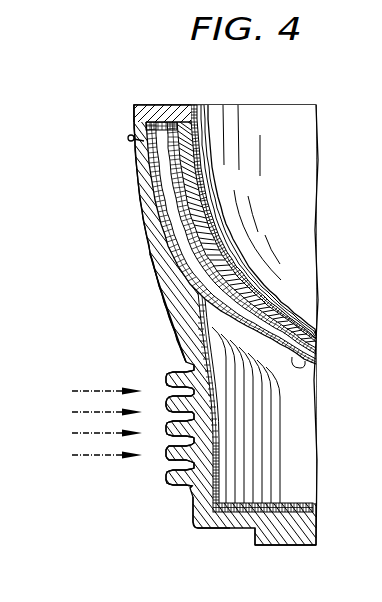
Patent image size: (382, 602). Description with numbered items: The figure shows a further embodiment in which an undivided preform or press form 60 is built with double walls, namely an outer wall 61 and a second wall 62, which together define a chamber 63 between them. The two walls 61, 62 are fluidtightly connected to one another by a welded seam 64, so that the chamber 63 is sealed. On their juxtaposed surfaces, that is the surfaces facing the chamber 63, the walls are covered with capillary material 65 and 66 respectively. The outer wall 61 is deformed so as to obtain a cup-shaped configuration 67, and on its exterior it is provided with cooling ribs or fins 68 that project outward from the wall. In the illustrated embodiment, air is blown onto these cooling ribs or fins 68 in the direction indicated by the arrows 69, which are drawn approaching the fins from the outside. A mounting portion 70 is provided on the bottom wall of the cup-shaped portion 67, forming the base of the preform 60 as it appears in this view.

The preform 60 is at (134, 213).
The outer wall 61 is at (140, 174).
The inner wall 62 is at (289, 323).
The chamber 63 is at (164, 304).
The welded seam 64 is at (128, 138).
The capillary material 65 is at (160, 251).
The capillary material 66 is at (320, 371).
The cup-shaped configuration 67 is at (190, 514).
The cooling ribs or fins 68 is at (175, 487).
The arrows 69 is at (82, 455).
The mounting portion 70 is at (283, 546).